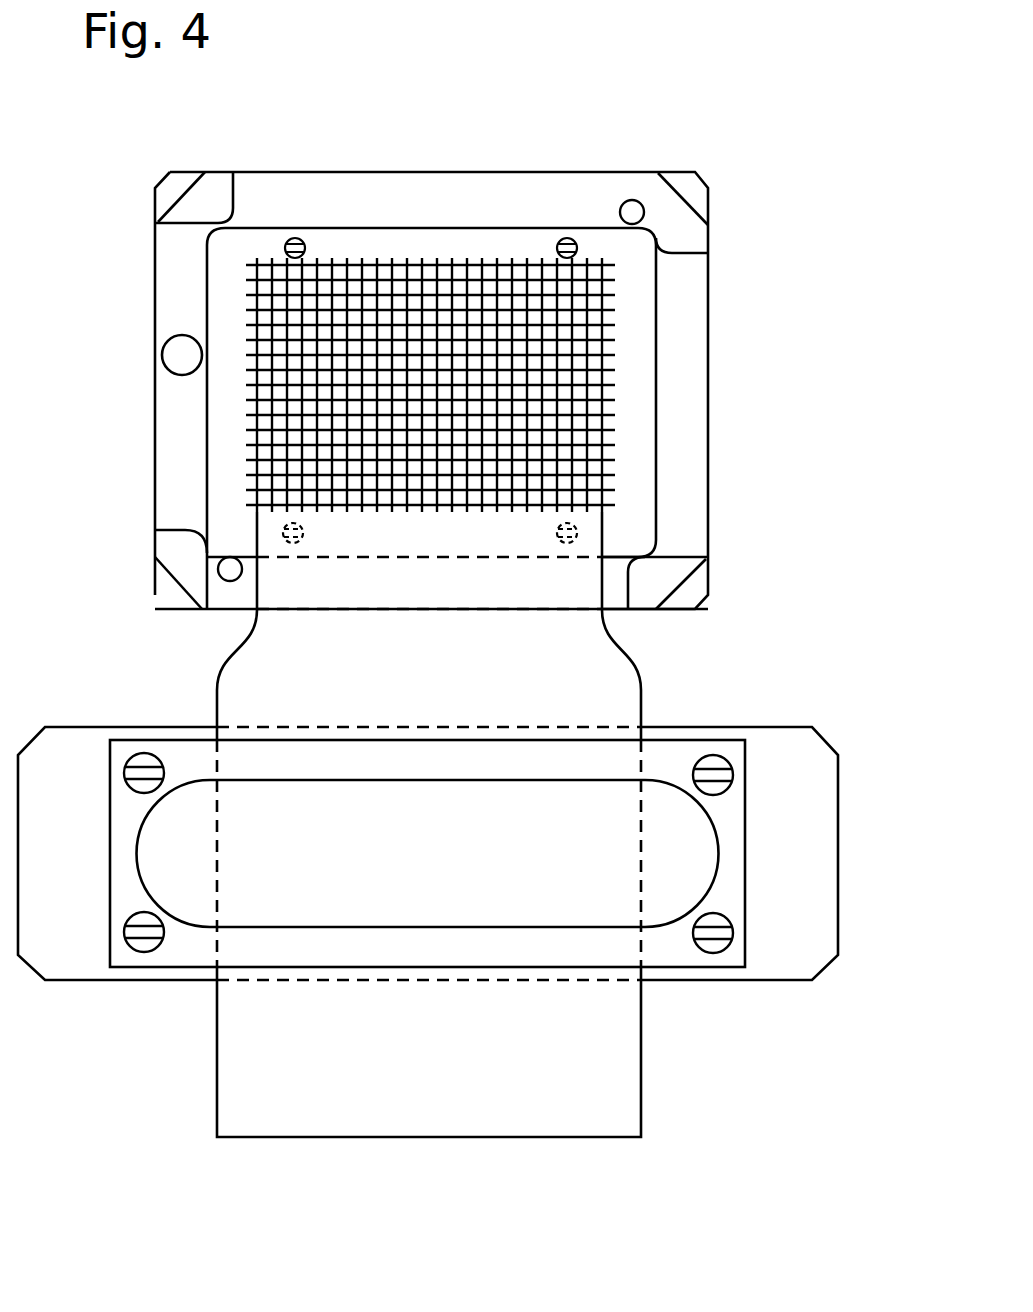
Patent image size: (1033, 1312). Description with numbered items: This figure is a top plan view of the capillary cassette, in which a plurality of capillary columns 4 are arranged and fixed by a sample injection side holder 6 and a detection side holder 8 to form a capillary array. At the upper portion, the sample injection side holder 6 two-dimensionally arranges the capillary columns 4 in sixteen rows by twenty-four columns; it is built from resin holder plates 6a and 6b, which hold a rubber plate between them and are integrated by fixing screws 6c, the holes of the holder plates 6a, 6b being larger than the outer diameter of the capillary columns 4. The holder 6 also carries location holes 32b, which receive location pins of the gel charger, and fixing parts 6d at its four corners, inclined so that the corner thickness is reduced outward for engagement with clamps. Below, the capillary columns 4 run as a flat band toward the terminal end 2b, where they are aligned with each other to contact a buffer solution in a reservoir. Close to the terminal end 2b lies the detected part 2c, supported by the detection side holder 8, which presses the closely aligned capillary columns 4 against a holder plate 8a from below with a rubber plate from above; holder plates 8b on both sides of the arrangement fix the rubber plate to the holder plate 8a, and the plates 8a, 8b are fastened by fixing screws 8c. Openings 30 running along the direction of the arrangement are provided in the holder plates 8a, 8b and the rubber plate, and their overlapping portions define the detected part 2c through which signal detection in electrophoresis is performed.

The sample injection side holder 6 is at (458, 394).
The holder plate 6a is at (693, 348).
The holder plate 6b is at (640, 378).
The fixing screws 6c is at (578, 247).
The fixing parts 6d is at (172, 185).
The location holes 32b is at (368, 350).
The capillary columns 4 is at (237, 688).
The detection side holder 8 is at (463, 853).
The holder plate 8a is at (787, 745).
The holder plate 8b is at (737, 905).
The fixing screws 8c is at (708, 760).
The openings 30 is at (428, 911).
The detected part 2c is at (458, 902).
The terminal end 2b is at (618, 1083).